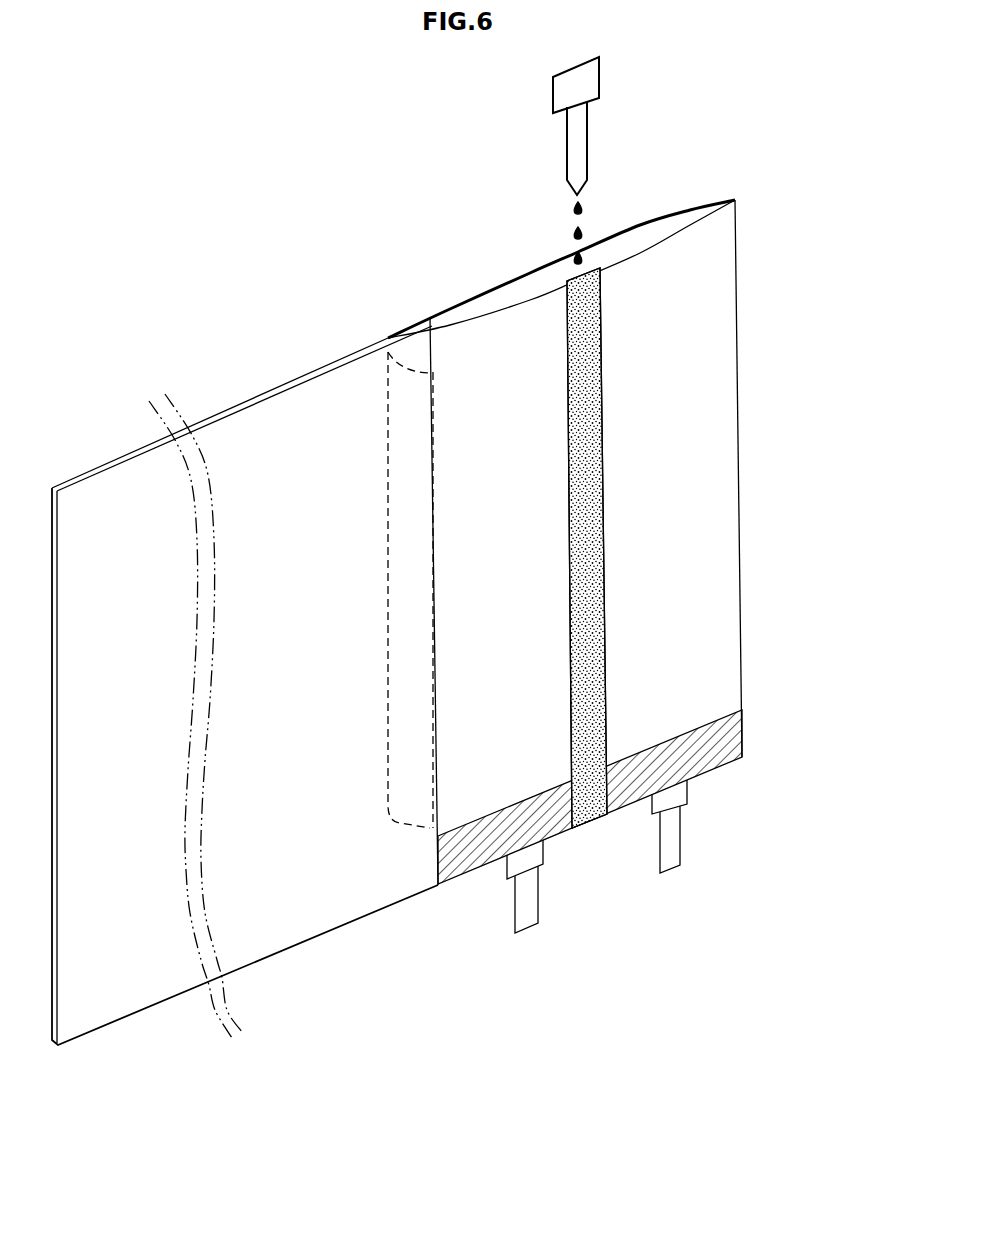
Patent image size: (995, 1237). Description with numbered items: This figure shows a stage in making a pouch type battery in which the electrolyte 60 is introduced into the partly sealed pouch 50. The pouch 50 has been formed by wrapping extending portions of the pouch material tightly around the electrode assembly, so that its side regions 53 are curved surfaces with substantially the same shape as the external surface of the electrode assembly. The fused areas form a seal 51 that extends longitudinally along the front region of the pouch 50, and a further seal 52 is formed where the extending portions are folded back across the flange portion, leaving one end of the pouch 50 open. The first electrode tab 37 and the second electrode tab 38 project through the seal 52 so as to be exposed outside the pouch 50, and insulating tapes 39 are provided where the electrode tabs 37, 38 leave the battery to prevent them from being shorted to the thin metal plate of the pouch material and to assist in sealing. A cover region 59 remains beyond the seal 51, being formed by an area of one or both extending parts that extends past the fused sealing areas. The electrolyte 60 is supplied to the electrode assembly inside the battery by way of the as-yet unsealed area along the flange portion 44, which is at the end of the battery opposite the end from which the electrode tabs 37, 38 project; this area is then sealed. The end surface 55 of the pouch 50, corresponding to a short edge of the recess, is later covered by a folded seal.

The first electrode tab 37 is at (668, 858).
The second electrode tab 38 is at (523, 920).
The insulating tapes 39 is at (688, 795).
The flange portion 44 is at (696, 204).
The pouch 50 is at (398, 318).
The seal 51 is at (592, 388).
The seal 52 is at (745, 730).
The side regions 53 is at (388, 338).
The surface 55 is at (430, 316).
The cover region 59 is at (111, 490).
The electrolyte 60 is at (583, 212).